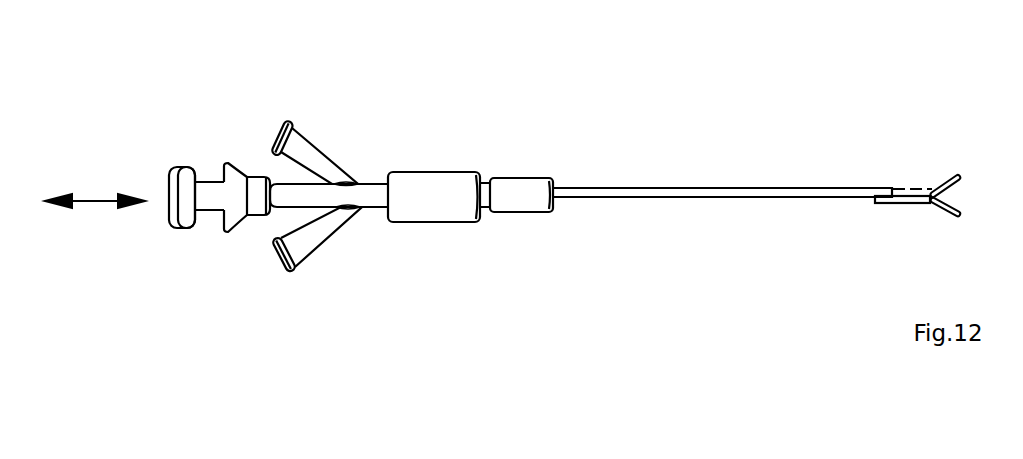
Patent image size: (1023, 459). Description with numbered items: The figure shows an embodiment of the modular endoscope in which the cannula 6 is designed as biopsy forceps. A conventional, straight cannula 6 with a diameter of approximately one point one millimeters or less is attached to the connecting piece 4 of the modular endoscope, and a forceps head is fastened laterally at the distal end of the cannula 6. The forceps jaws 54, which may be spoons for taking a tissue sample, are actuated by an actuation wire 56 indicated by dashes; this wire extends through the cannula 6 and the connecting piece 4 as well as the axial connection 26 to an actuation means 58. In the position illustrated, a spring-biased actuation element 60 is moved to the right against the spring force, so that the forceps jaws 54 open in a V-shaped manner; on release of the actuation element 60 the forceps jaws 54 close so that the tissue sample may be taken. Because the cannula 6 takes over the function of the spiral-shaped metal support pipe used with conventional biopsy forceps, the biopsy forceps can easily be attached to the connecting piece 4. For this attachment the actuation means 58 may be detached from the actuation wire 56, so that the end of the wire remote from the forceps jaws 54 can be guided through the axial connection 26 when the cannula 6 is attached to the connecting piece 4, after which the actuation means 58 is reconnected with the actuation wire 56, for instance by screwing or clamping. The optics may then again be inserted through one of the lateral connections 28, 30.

The connecting piece 4 is at (430, 190).
The cannula 6 is at (762, 187).
The axial connection 26 is at (285, 192).
The lateral connection 28 is at (307, 235).
The lateral connection 30 is at (307, 150).
The forceps jaws 54 is at (950, 173).
The actuation wire 56 is at (903, 193).
The actuation means 58 is at (182, 229).
The actuation element 60 is at (176, 165).